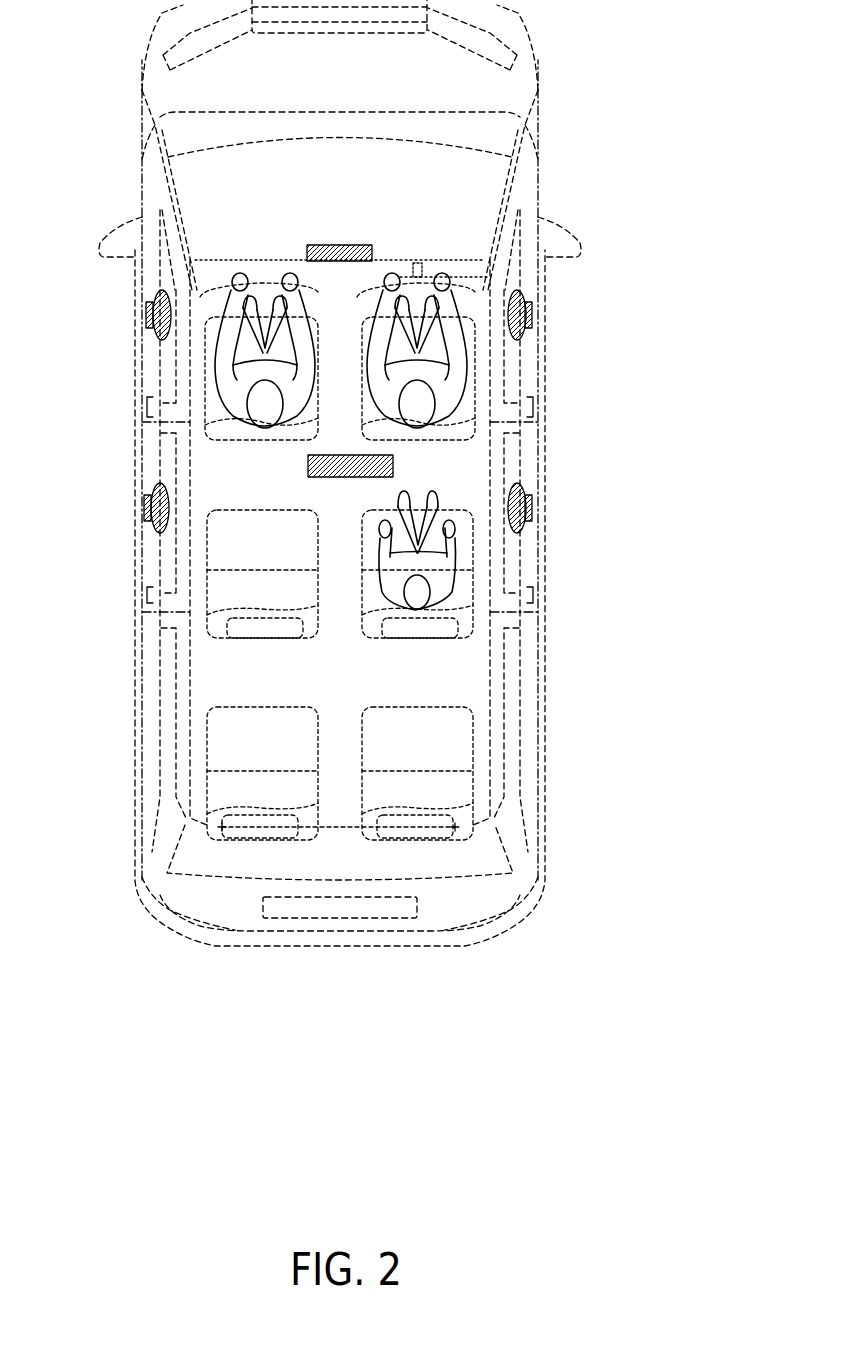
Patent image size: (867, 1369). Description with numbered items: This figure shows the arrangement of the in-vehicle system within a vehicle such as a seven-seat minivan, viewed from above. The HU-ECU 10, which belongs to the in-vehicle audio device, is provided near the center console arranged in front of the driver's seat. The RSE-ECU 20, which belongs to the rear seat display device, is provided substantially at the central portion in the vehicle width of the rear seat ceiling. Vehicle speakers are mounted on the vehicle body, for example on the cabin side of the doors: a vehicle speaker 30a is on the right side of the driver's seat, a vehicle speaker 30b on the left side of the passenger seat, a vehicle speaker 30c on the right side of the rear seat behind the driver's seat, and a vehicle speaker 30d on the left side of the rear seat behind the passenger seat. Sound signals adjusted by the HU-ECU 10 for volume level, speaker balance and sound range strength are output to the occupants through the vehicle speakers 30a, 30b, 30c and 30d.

The HU-ECU 10 is at (343, 245).
The RSE-ECU 20 is at (393, 463).
The vehicle speaker 30a is at (532, 322).
The vehicle speaker 30b is at (146, 322).
The vehicle speaker 30c is at (532, 515).
The vehicle speaker 30d is at (144, 513).